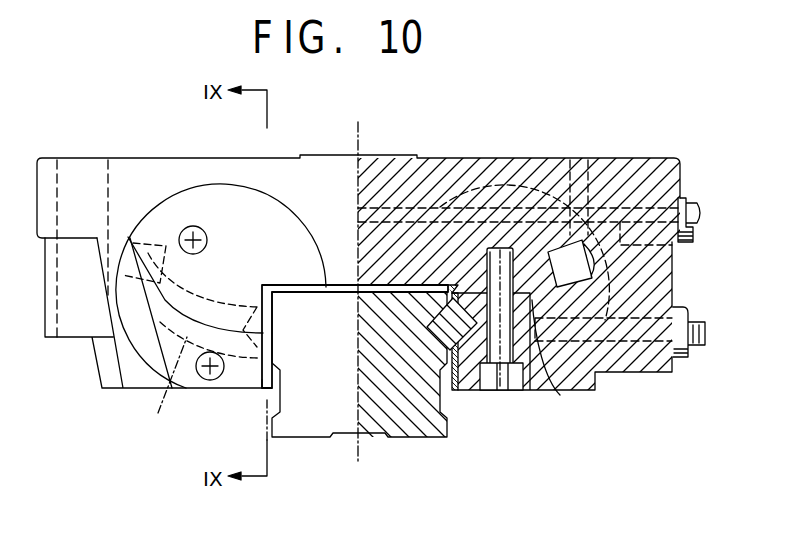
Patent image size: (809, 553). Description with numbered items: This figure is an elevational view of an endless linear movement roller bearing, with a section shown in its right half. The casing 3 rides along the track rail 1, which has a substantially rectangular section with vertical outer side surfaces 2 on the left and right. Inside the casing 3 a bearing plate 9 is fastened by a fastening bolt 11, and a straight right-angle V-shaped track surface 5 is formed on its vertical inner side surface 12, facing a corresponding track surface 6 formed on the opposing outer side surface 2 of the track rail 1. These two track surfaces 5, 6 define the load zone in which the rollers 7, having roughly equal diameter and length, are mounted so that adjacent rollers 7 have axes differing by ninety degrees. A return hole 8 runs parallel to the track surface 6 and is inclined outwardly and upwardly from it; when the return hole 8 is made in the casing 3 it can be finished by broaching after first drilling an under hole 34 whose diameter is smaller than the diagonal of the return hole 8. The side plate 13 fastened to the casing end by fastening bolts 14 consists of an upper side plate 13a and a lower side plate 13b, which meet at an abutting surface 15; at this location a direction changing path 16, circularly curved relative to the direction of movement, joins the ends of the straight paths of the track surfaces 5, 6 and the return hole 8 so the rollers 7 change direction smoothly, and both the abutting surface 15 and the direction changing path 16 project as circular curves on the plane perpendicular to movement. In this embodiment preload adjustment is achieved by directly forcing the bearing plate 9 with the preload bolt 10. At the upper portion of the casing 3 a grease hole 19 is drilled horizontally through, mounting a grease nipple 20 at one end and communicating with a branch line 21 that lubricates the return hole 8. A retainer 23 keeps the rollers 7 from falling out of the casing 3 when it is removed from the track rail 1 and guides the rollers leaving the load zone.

The track rail 1 is at (342, 422).
The outer side surface 2 is at (447, 412).
The casing 3 is at (657, 173).
The track surface 5 is at (442, 338).
The track surface 6 is at (470, 388).
The roller 7 is at (441, 298).
The return hole 8 is at (168, 248).
The bearing plate 9 is at (551, 364).
The preload bolt 10 is at (700, 347).
The fastening bolt 11 is at (508, 377).
The inner side surface 12 is at (268, 400).
The side plate 13 is at (231, 212).
The upper side plate 13a is at (212, 203).
The lower side plate 13b is at (160, 355).
The fastening bolt 14 is at (188, 226).
The abutting surface 15 is at (175, 305).
The direction changing path 16 is at (161, 386).
The grease hole 19 is at (513, 190).
The grease nipple 20 is at (698, 203).
The branch line 21 is at (585, 160).
The retainer 23 is at (448, 285).
The under hole 34 is at (594, 256).